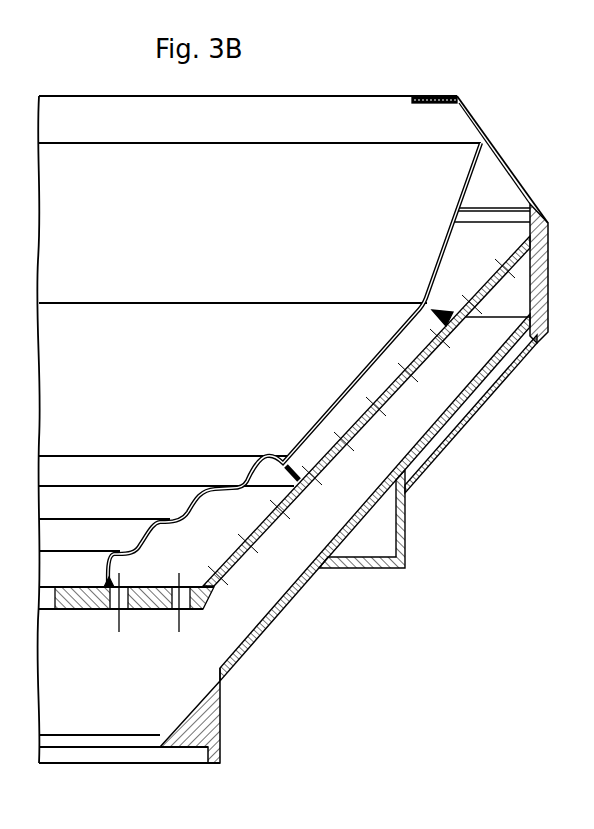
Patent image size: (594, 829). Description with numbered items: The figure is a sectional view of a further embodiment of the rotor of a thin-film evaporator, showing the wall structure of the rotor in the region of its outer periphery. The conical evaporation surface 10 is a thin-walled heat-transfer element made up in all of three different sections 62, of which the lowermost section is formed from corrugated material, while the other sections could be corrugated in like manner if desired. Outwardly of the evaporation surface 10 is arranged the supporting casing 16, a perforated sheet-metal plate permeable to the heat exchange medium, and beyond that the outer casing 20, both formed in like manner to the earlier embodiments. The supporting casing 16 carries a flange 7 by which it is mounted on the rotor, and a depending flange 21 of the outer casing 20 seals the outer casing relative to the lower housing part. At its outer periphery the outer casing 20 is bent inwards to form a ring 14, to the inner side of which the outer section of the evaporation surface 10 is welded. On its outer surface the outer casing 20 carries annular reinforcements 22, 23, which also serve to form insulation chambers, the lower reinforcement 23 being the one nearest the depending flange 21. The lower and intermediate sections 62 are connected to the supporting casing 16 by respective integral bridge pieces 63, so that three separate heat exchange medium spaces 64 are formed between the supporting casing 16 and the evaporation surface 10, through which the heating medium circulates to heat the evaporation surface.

The flange 7 is at (80, 611).
The evaporation surface 10 is at (176, 506).
The ring 14 is at (537, 346).
The supporting casing 16 is at (252, 553).
The outer casing 20 is at (307, 585).
The depending flange 21 is at (221, 737).
The annular reinforcement 22 is at (457, 433).
The lower reinforcement 23 is at (407, 538).
The sections 62 is at (438, 258).
The bridge pieces 63 is at (351, 374).
The heat exchange medium spaces 64 is at (475, 253).